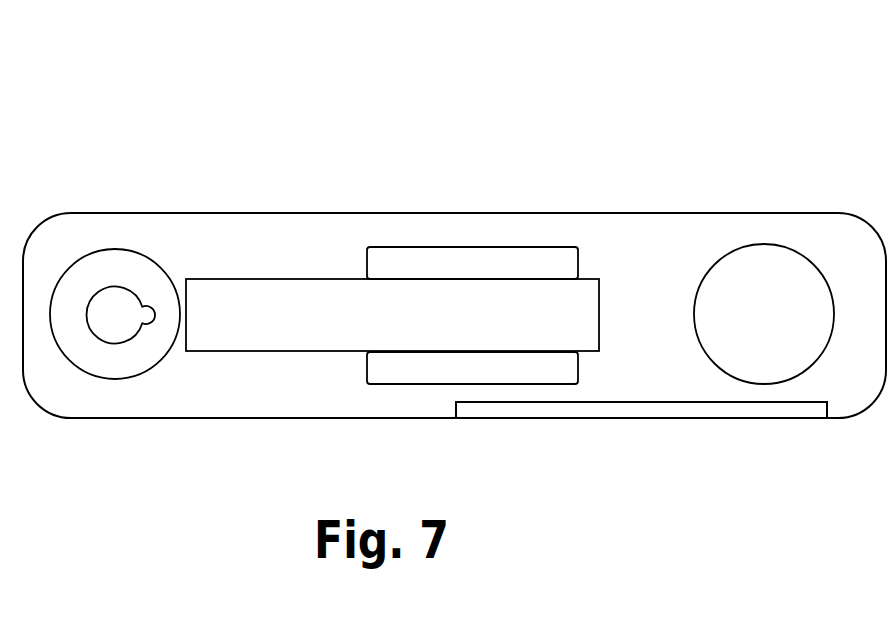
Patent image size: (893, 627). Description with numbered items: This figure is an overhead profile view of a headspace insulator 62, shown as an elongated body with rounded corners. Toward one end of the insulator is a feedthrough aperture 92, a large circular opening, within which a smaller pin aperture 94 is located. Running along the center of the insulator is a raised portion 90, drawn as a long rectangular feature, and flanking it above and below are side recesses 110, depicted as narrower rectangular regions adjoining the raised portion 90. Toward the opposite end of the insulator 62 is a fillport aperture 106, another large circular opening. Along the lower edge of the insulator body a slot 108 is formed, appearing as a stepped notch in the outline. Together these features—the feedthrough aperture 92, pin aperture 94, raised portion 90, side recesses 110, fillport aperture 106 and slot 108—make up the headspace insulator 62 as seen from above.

The mounting bracket 62 is at (681, 119).
The raised portion 90 is at (403, 328).
The feedthrough aperture 92 is at (140, 250).
The pin aperture 94 is at (101, 325).
The fillport aperture 106 is at (745, 324).
The slot 108 is at (611, 419).
The side recesses 110 is at (427, 272).